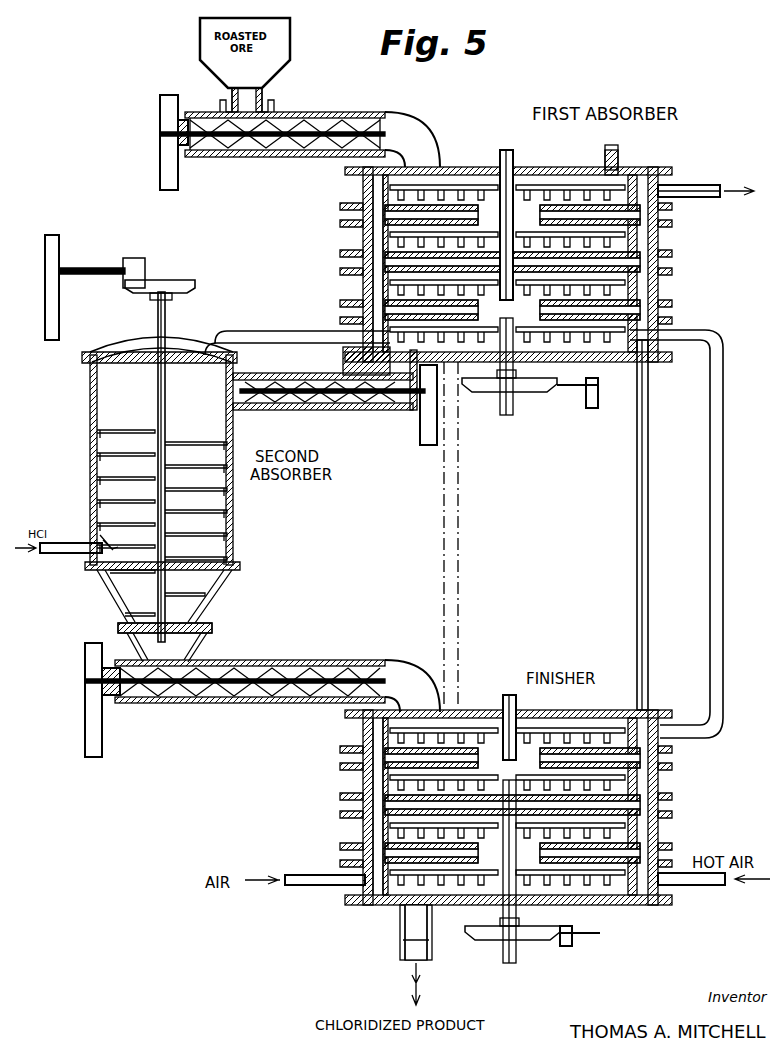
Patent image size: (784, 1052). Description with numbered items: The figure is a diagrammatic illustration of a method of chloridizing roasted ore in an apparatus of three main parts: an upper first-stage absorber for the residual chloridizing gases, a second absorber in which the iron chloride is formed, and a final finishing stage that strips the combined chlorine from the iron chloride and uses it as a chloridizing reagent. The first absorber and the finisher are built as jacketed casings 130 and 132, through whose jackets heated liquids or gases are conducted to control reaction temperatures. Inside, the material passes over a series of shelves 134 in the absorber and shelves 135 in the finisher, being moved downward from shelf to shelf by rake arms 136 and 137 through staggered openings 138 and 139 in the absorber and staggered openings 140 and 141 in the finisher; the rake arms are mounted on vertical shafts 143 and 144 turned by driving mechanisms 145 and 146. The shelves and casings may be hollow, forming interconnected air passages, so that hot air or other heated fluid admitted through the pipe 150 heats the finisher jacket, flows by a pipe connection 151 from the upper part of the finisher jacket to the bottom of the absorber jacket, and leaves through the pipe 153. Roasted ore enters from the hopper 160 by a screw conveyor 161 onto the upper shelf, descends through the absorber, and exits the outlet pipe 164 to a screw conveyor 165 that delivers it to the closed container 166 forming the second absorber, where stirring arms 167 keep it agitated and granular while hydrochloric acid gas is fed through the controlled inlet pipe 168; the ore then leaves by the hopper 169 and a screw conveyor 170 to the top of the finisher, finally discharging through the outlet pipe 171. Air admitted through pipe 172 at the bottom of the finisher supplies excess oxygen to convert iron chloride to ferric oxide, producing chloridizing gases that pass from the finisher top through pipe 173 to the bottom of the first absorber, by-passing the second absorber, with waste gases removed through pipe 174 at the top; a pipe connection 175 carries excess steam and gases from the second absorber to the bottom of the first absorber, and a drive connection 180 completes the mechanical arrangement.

The jacketed casing 130 is at (529, 281).
The jacketed casing 132 is at (507, 838).
The shelves 134 is at (560, 232).
The shelves 135 is at (565, 728).
The rake arms 136 is at (484, 172).
The rake arms 137 is at (620, 730).
The staggered openings 138 is at (512, 267).
The staggered openings 139 is at (512, 262).
The staggered openings 140 is at (512, 805).
The staggered openings 141 is at (512, 805).
The vertical shaft 143 is at (522, 148).
The vertical shaft 144 is at (514, 694).
The driving mechanism 145 is at (550, 398).
The driving mechanism 146 is at (552, 948).
The pipe 150 is at (700, 888).
The pipe connection 151 is at (648, 548).
The pipe 153 is at (703, 188).
The hopper 160 is at (285, 65).
The screw conveyor 161 is at (345, 125).
The outlet pipe 164 is at (335, 397).
The screw conveyor 165 is at (345, 410).
The closed container 166 is at (139, 448).
The stirring arms 167 is at (162, 512).
The controlled inlet pipe 168 is at (58, 553).
The hopper 169 is at (195, 636).
The screw conveyor 170 is at (332, 648).
The outlet pipe 171 is at (402, 948).
The pipe 172 is at (320, 875).
The pipe 173 is at (725, 612).
The pipe 174 is at (620, 148).
The pipe connection 175 is at (298, 331).
The drive connection 180 is at (455, 548).